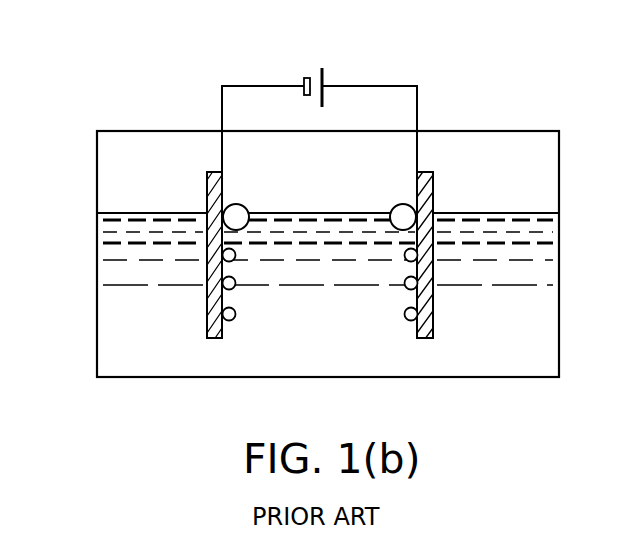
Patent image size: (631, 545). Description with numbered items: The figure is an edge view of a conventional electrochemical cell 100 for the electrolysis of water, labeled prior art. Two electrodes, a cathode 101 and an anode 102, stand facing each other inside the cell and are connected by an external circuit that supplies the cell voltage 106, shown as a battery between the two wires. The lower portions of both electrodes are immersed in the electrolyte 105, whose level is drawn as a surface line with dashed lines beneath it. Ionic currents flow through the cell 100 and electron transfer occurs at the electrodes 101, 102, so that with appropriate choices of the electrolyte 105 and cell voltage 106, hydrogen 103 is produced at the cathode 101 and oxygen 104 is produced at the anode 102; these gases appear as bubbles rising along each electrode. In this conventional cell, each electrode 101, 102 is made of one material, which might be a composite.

The electrochemical cell 100 is at (120, 60).
The cathode 101 is at (206, 198).
The anode 102 is at (434, 198).
The hydrogen 103 is at (245, 226).
The oxygen 104 is at (394, 226).
The electrolyte 105 is at (559, 284).
The cell voltage 106 is at (324, 70).